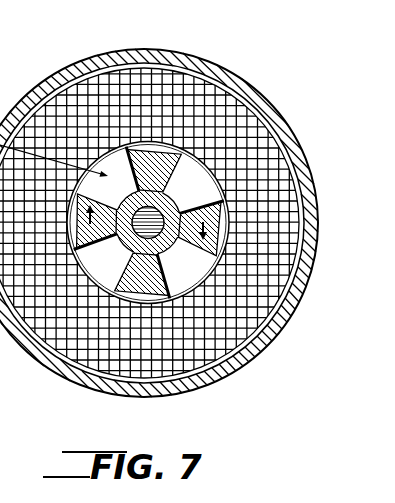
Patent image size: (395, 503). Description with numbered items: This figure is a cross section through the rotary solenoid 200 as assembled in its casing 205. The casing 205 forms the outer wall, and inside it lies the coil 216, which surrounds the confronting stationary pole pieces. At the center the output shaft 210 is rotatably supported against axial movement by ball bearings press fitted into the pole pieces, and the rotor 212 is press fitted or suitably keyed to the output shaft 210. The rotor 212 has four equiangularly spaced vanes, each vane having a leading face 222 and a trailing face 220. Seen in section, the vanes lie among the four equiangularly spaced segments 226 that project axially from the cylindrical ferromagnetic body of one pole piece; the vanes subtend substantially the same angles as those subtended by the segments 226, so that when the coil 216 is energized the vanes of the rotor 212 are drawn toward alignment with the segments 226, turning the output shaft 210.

The rotary solenoid 200 is at (71, 381).
The casing 205 is at (107, 57).
The output shaft 210 is at (170, 196).
The rotor 212 is at (118, 265).
The coil 216 is at (157, 90).
The trailing face 220 is at (316, 199).
The leading face 222 is at (200, 258).
The segments 226 is at (188, 170).